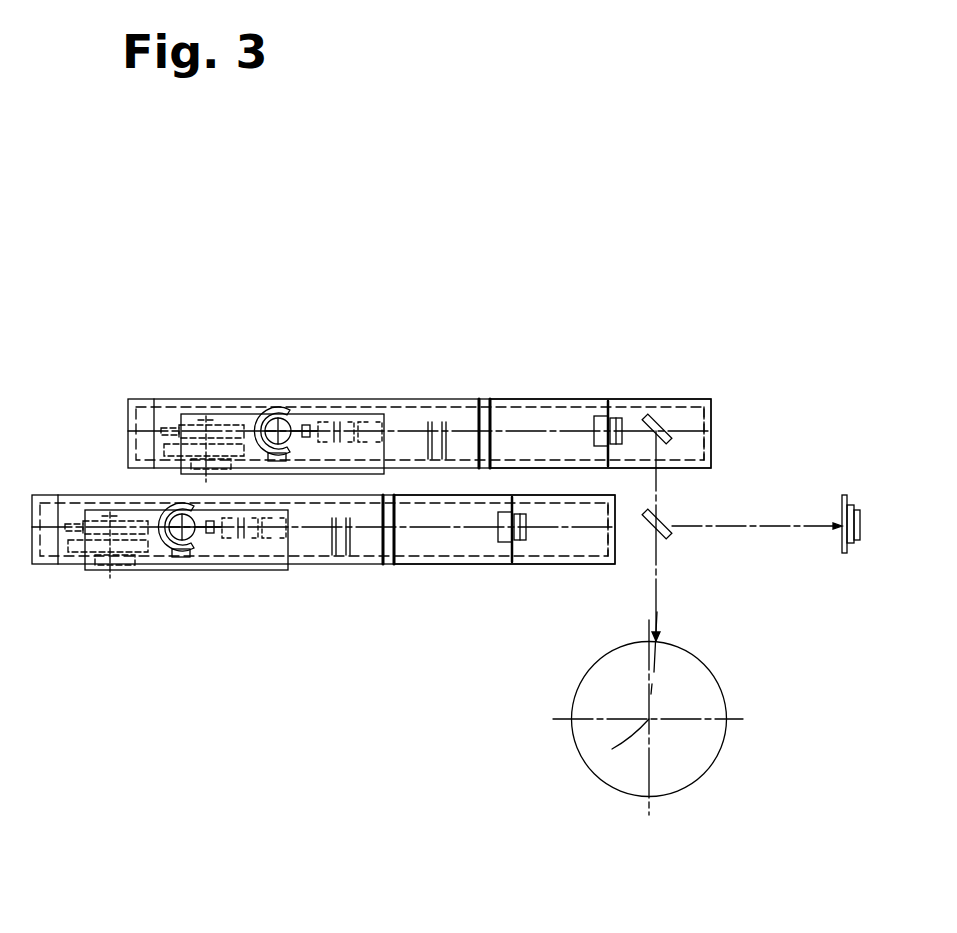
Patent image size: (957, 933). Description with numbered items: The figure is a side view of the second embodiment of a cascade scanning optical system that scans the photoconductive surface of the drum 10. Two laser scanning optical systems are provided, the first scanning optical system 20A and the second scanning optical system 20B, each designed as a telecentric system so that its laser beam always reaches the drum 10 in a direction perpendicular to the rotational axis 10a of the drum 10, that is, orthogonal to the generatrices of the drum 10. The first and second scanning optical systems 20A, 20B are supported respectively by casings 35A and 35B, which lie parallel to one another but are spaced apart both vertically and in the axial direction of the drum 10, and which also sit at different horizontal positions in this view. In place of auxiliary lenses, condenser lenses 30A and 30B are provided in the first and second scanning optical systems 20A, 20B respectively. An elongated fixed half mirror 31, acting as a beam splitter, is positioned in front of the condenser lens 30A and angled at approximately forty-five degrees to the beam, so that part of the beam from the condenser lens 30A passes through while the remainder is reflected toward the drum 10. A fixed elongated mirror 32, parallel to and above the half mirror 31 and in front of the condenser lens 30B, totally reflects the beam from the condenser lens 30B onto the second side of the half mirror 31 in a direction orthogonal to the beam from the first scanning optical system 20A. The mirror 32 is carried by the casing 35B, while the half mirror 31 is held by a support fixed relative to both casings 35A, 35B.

The drum 10 is at (713, 670).
The rotational axis 10a is at (612, 749).
The first scanning optical system 20A is at (312, 520).
The second scanning optical system 20B is at (451, 398).
The condenser lens 30A is at (520, 558).
The condenser lens 30B is at (600, 412).
The half mirror 31 is at (663, 514).
The mirror 32 is at (652, 410).
The casing 35A is at (428, 553).
The casing 35B is at (698, 437).